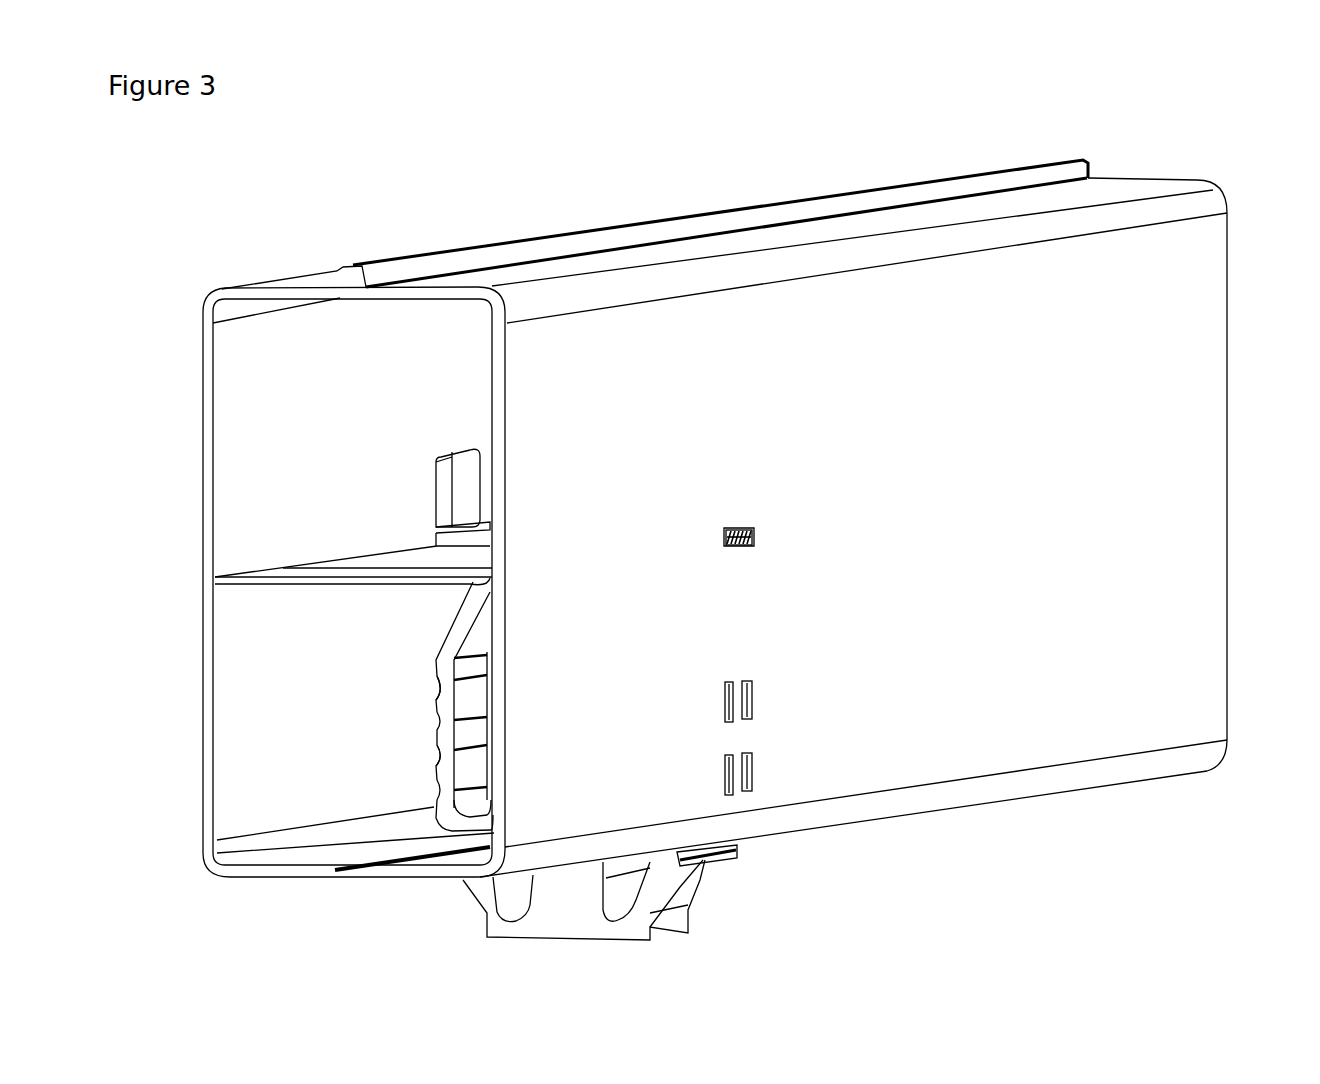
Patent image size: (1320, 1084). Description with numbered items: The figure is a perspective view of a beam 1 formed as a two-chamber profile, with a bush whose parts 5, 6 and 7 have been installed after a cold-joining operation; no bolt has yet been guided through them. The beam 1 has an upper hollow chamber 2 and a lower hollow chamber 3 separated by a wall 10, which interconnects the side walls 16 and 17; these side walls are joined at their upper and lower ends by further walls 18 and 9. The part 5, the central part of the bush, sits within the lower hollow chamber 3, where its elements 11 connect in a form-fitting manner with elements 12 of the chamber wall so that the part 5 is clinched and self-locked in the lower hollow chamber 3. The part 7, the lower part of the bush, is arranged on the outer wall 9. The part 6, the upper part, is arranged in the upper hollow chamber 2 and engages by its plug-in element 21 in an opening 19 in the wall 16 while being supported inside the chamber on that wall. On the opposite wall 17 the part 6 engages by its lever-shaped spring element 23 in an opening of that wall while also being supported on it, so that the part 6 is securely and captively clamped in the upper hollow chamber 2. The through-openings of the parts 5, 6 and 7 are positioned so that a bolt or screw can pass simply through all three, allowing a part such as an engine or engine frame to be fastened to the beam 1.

The beam 1 is at (1192, 123).
The upper hollow chamber 2 is at (300, 362).
The lower hollow chamber 3 is at (258, 748).
The part 5 is at (462, 632).
The part 6 is at (475, 537).
The part 7 is at (680, 893).
The wall 9 is at (280, 870).
The wall 10 is at (345, 568).
The elements 11 is at (419, 693).
The elements 12 is at (768, 695).
The wall 16 is at (1135, 414).
The wall 17 is at (203, 450).
The wall 18 is at (473, 282).
The opening 19 is at (757, 532).
The plug-in element 21 is at (747, 530).
The lever-shaped spring element 23 is at (460, 475).